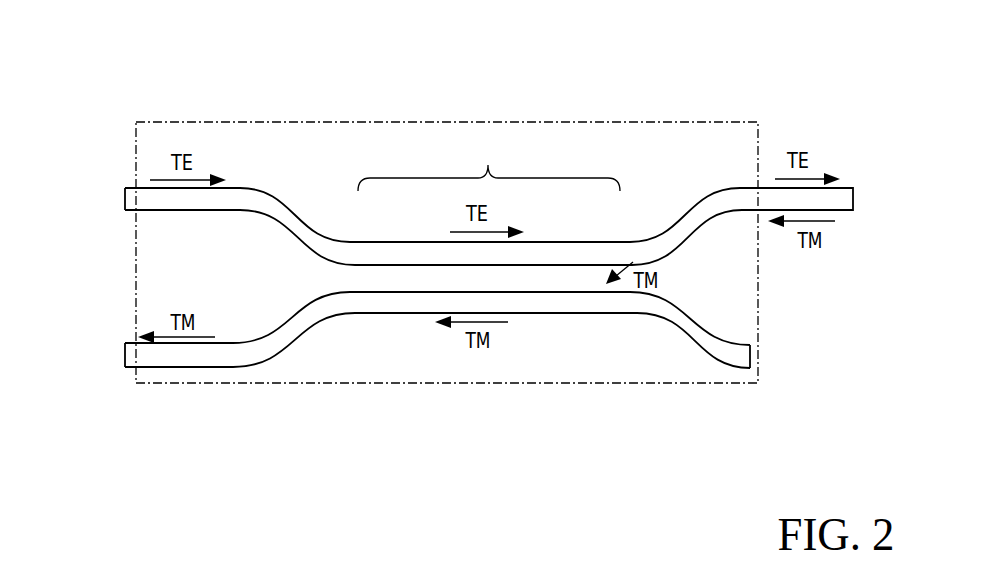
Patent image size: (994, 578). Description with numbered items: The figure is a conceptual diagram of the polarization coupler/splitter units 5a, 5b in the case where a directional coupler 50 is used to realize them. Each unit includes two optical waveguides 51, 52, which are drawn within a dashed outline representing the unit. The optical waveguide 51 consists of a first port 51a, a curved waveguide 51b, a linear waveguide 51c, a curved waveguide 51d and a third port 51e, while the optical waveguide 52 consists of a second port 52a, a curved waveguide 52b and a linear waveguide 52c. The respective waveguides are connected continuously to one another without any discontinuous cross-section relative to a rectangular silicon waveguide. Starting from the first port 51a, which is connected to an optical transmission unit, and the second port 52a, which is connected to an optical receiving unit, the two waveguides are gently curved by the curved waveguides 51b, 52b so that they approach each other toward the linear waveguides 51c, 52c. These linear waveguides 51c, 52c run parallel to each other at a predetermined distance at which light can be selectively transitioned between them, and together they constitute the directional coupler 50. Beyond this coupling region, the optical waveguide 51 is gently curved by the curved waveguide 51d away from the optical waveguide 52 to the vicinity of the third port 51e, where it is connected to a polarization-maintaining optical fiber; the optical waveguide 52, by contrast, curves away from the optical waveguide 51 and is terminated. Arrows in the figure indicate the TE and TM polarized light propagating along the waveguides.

The polarization coupler/splitter unit 5a is at (444, 206).
The polarization coupler/splitter unit 5b is at (183, 122).
The directional coupler 50 is at (489, 161).
The optical waveguide 51 is at (463, 190).
The first port 51a is at (182, 200).
The curved waveguide 51b is at (290, 225).
The linear waveguide 51c is at (530, 253).
The curved waveguide 51d is at (685, 223).
The third port 51e is at (835, 200).
The optical waveguide 52 is at (401, 384).
The second port 52a is at (181, 355).
The curved waveguide 52b is at (295, 328).
The linear waveguide 52c is at (560, 302).